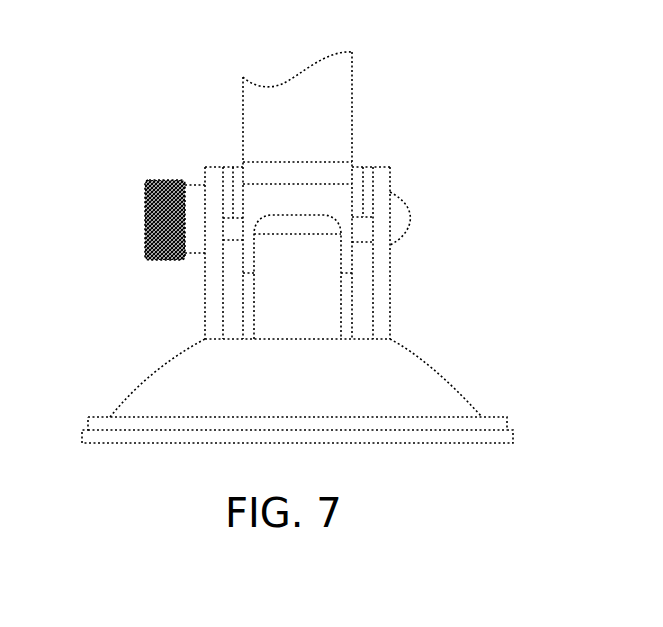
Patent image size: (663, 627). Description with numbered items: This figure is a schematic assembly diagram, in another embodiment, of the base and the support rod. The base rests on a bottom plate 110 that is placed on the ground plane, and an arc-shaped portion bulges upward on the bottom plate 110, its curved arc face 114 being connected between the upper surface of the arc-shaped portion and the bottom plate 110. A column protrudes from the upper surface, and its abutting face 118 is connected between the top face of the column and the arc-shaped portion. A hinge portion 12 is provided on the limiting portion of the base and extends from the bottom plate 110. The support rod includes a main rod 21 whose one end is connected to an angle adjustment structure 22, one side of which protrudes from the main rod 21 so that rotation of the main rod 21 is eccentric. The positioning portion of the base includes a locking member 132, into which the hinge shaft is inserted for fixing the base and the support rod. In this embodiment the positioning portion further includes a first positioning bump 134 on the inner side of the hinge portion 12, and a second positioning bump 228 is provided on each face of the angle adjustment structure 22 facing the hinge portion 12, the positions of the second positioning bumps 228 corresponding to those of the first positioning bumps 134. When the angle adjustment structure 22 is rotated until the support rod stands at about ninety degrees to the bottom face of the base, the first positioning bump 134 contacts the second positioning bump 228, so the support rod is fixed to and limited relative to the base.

The main rod 21 is at (337, 92).
The angle adjustment structure 22 is at (333, 203).
The hinge portion 12 is at (215, 192).
The second positioning bump 228 is at (241, 175).
The first positioning bump 134 is at (226, 187).
The locking member 132 is at (145, 206).
The abutting face 118 is at (277, 308).
The arc face 114 is at (180, 367).
The bottom plate 110 is at (100, 426).